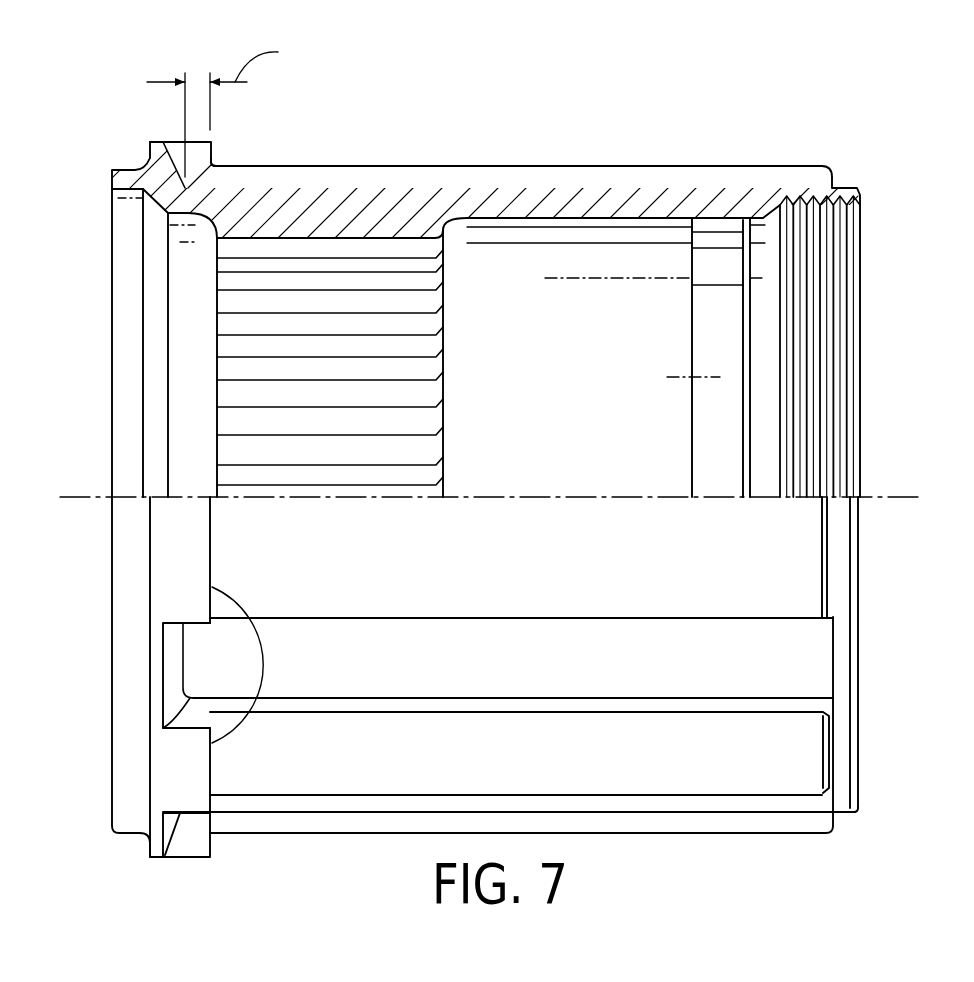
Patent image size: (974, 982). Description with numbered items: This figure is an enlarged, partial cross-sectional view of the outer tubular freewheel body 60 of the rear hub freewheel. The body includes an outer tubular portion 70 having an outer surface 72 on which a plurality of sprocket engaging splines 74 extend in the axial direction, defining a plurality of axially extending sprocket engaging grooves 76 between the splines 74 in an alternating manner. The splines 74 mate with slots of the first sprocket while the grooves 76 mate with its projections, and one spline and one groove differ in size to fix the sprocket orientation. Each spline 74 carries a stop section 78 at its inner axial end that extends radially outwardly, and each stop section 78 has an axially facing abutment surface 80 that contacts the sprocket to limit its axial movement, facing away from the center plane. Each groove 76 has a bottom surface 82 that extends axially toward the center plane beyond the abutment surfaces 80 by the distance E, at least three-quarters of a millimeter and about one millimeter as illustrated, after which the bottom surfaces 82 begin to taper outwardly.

The outer tubular freewheel body 60 is at (663, 97).
The outer tubular portion 70 is at (858, 190).
The outer surface 72 is at (475, 568).
The sprocket engaging splines 74 is at (735, 167).
The sprocket engaging grooves 76 is at (547, 176).
The stop section 78 is at (197, 153).
The abutment surface 80 is at (213, 152).
The bottom surface 82 is at (213, 183).